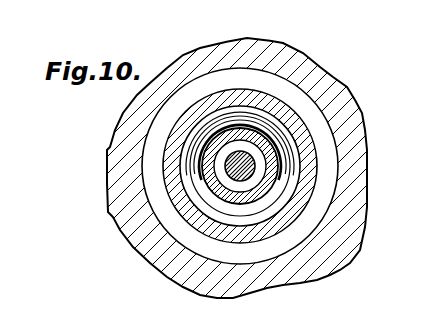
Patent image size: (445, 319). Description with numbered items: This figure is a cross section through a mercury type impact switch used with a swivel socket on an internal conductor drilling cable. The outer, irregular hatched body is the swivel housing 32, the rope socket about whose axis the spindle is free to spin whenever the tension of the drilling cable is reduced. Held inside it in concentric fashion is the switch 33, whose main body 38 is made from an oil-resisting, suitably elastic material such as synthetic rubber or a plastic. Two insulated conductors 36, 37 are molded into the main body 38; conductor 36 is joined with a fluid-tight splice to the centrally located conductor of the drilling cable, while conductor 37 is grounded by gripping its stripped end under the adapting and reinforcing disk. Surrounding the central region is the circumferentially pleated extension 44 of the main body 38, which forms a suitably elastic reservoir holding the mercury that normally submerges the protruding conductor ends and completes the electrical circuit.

The swivel housing 32 is at (334, 249).
The switch 33 is at (187, 190).
The insulated conductor 36 is at (253, 165).
The insulated conductor 37 is at (225, 167).
The main body of the switch 38 is at (205, 148).
The circumferentially pleated extension 44 is at (275, 185).